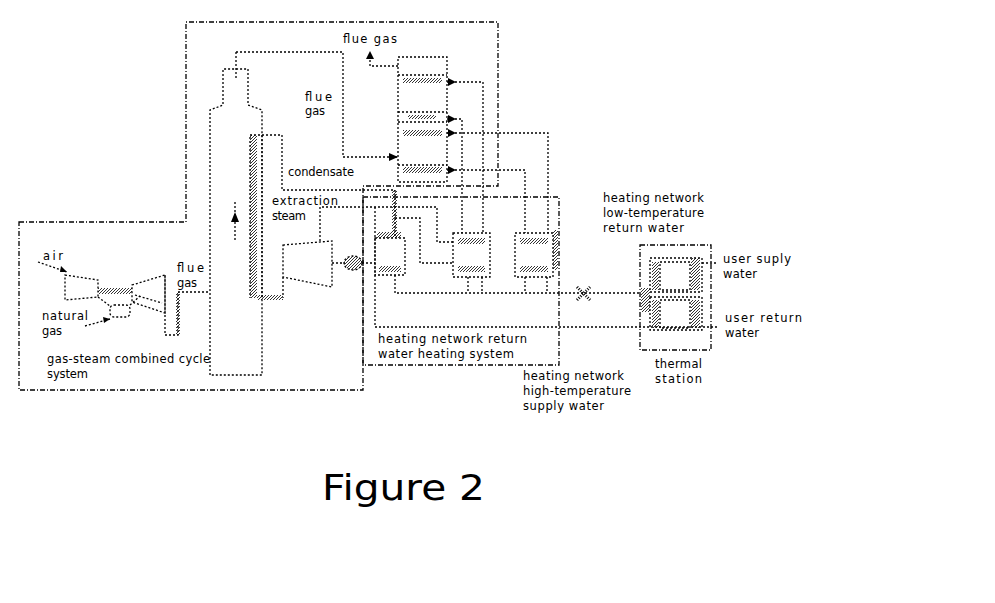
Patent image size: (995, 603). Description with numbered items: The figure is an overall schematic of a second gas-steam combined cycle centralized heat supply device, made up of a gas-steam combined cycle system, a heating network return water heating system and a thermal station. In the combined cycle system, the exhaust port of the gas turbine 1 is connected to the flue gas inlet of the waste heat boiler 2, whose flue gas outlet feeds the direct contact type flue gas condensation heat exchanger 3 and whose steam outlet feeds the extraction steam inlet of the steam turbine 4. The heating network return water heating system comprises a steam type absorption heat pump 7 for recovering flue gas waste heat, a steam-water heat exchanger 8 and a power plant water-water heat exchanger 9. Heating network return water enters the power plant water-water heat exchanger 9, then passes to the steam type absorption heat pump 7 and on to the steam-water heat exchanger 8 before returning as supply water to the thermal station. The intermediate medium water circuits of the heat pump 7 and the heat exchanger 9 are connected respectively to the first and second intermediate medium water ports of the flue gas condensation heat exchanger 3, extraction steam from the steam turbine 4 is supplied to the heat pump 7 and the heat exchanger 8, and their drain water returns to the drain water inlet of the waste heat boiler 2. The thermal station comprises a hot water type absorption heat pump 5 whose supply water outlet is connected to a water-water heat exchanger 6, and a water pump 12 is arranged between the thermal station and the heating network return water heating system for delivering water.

The gas turbine 1 is at (122, 282).
The waste heat boiler 2 is at (304, 213).
The direct contact type flue gas condensation heat exchanger 3 is at (457, 142).
The steam turbine 4 is at (355, 253).
The hot water type absorption heat pump 5 is at (676, 313).
The water-water heat exchanger 6 is at (684, 275).
The steam type absorption heat pump for recovering flue gas waste heat 7 is at (471, 263).
The steam-water heat exchanger 8 is at (507, 241).
The power plant water-water heat exchanger 9 is at (536, 261).
The water pump 12 is at (585, 290).